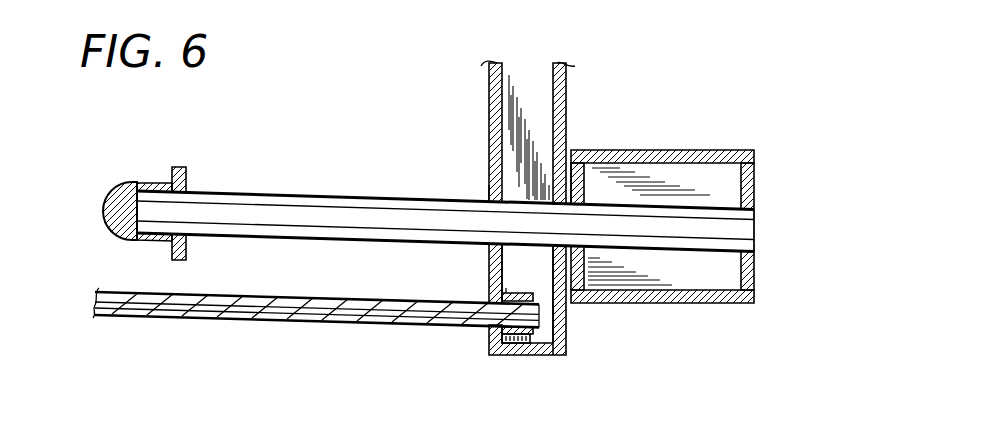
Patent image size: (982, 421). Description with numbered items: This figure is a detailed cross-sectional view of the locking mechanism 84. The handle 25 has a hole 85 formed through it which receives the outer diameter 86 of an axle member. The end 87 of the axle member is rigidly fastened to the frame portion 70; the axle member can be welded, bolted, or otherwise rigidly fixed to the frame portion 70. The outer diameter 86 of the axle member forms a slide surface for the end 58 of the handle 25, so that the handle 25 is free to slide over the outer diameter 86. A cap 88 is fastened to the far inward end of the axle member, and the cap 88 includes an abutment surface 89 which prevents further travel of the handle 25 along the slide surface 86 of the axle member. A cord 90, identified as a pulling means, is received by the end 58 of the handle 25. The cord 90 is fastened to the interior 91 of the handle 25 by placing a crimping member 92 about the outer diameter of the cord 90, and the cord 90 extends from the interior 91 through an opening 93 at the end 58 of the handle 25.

The handle 25 is at (489, 115).
The end of handle 58 is at (566, 318).
The frame portion 70 is at (683, 150).
The locking mechanism 84 is at (640, 112).
The hole 85 is at (489, 197).
The outer diameter of axle member 86 is at (257, 193).
The end of axle member 87 is at (743, 233).
The cap 88 is at (110, 196).
The abutment surface 89 is at (186, 168).
The cord 90 is at (228, 318).
The interior of handle 91 is at (523, 263).
The crimping member 92 is at (512, 343).
The opening 93 is at (488, 325).